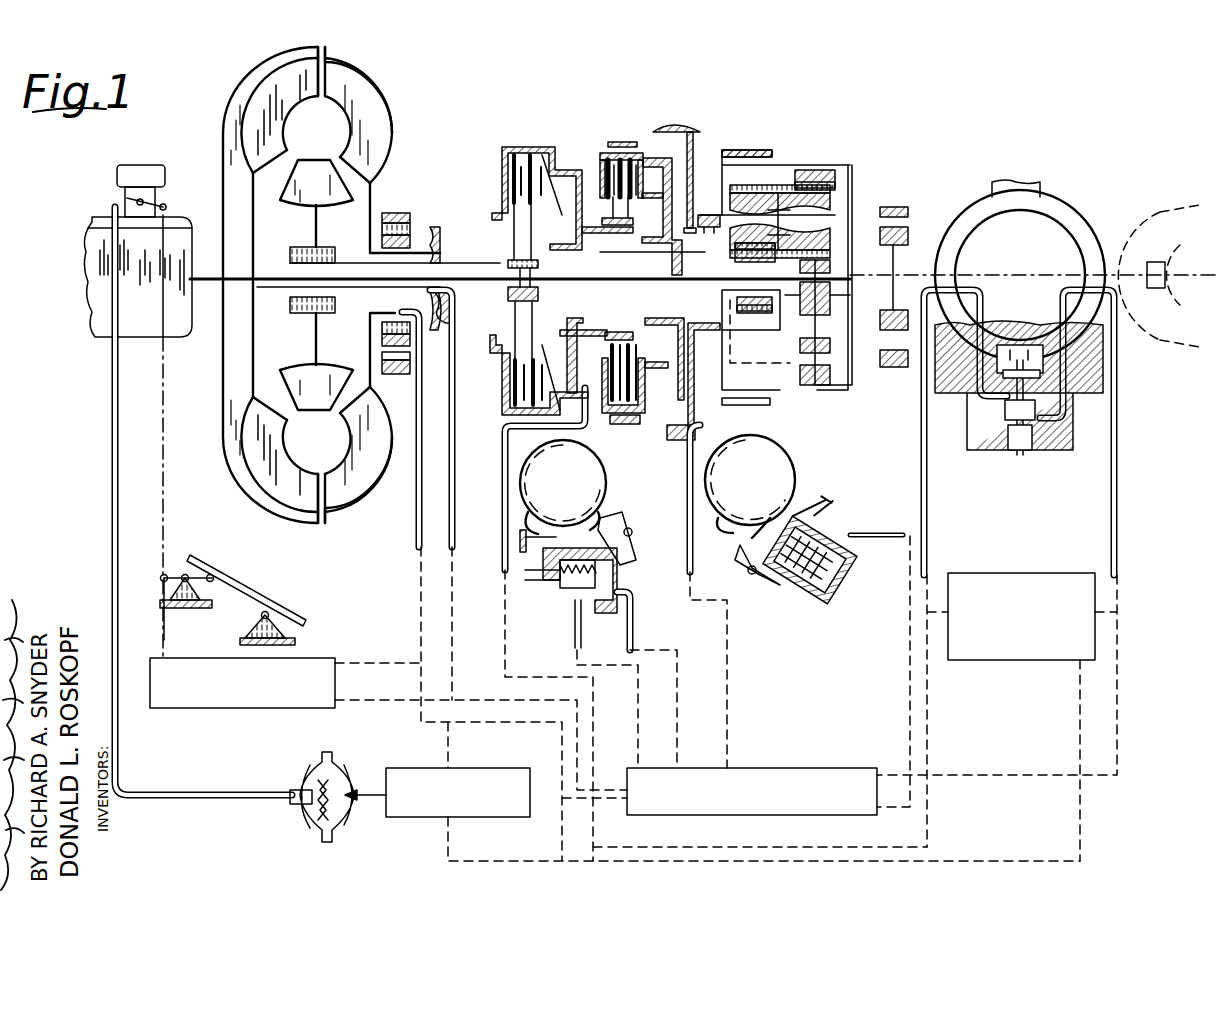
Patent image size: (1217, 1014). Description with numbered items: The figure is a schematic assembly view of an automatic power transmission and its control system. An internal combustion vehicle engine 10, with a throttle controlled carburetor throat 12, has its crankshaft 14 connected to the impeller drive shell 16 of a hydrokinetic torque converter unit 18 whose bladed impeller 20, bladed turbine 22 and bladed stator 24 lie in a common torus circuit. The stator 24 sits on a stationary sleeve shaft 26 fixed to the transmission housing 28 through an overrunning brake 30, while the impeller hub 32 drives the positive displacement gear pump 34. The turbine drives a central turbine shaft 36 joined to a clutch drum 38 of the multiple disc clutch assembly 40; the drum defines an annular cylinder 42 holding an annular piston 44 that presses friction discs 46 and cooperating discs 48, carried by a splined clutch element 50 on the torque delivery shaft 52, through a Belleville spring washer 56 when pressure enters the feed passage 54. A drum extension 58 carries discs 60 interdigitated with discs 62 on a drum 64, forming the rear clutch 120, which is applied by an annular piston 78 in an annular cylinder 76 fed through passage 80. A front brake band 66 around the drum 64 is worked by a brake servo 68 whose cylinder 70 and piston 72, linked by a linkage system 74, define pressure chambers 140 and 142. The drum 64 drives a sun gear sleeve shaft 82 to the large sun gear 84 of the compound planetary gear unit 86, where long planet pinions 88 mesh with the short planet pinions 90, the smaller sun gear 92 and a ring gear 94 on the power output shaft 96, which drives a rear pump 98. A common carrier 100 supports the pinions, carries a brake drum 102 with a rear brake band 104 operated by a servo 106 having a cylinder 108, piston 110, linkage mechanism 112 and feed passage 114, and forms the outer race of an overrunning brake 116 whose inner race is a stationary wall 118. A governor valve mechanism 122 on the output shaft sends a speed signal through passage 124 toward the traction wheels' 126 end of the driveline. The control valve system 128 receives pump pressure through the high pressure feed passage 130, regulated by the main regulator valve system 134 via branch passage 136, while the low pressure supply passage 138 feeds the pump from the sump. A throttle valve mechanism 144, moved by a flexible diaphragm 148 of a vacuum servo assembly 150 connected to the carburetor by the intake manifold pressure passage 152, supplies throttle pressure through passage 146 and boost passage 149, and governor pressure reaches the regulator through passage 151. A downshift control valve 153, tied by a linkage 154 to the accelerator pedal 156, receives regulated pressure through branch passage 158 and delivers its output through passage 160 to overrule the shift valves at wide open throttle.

The internal combustion vehicle engine 10 is at (88, 252).
The carburetor throat 12 is at (128, 198).
The engine crankshaft 14 is at (198, 330).
The impeller drive shell 16 is at (245, 80).
The hydrokinetic torque converter unit 18 is at (386, 110).
The bladed impeller 20 is at (350, 85).
The bladed turbine 22 is at (246, 120).
The bladed stator 24 is at (314, 160).
The stationary sleeve shaft 26 is at (347, 252).
The transmission housing 28 is at (690, 120).
The overrunning brake 30 is at (300, 246).
The impeller hub 32 is at (372, 213).
The positive displacement gear pump 34 is at (435, 222).
The central turbine shaft 36 is at (358, 283).
The clutch drum 38 is at (528, 147).
The multiple disc clutch assembly 40 is at (502, 147).
The annular cylinder 42 is at (582, 238).
The annular piston 44 is at (513, 226).
The friction discs 46 is at (513, 177).
The cooperating friction discs 48 is at (510, 158).
The externally splined clutch element 50 is at (513, 264).
The torque delivery shaft 52 is at (659, 269).
The clutch pressure feed passage 54 is at (504, 517).
The Belleville spring washer 56 is at (510, 200).
The drum extension 58 is at (590, 330).
The externally splined discs 60 is at (628, 332).
The discs 62 is at (628, 424).
The drum 64 is at (640, 142).
The front brake band 66 is at (610, 130).
The fluid pressure operated brake servo 68 is at (620, 592).
The servo cylinder 70 is at (545, 617).
The servo piston 72 is at (595, 602).
The linkage system 74 is at (630, 553).
The annular cylinder 76 is at (695, 323).
The annular piston 78 is at (667, 440).
The clutch pressure feed passage 80 is at (692, 537).
The sun gear sleeve shaft 82 is at (725, 298).
The sun gear 84 is at (770, 328).
The compound planetary gear unit 86 is at (850, 162).
The long planet pinions 88 is at (775, 185).
The short planet pinions 90 is at (830, 350).
The sun gear 92 is at (833, 277).
The ring gear 94 is at (827, 170).
The power output shaft 96 is at (875, 275).
The rear pump 98 is at (900, 210).
The common carrier 100 is at (780, 360).
The brake drum 102 is at (753, 150).
The rear brake band 104 is at (727, 147).
The fluid pressure operated brake servo 106 is at (820, 525).
The servo cylinder 108 is at (835, 572).
The servo piston 110 is at (833, 588).
The linkage mechanism 112 is at (762, 575).
The pressure feed passage 114 is at (875, 533).
The overrunning brake 116 is at (707, 234).
The stationary wall 118 is at (707, 140).
The rear clutch 120 is at (598, 145).
The fluid pressure governor valve mechanism 122 is at (1065, 455).
The governor pressure passage 124 is at (1115, 502).
The vehicle traction wheels 126 is at (1160, 210).
The control valve system 128 is at (815, 742).
The high pressure fluid feed passage 130 is at (418, 529).
The main regulator valve system 134 is at (1080, 573).
The branch passage 136 is at (823, 845).
The low pressure fluid supply passage 138 is at (450, 511).
The pressure chamber 140 is at (575, 623).
The pressure chamber 142 is at (645, 620).
The throttle valve mechanism 144 is at (392, 816).
The throttle pressure passage 146 is at (448, 835).
The flexible diaphragm 148 is at (300, 817).
The boost pressure passage 149 is at (1005, 863).
The vacuum servo assembly 150 is at (304, 772).
The passage 151 is at (1115, 610).
The engine intake manifold pressure passage 152 is at (111, 382).
The downshift control valve 153 is at (313, 658).
The linkage 154 is at (158, 654).
The accelerator pedal 156 is at (236, 584).
The branch passage 158 is at (352, 664).
The passage 160 is at (480, 682).